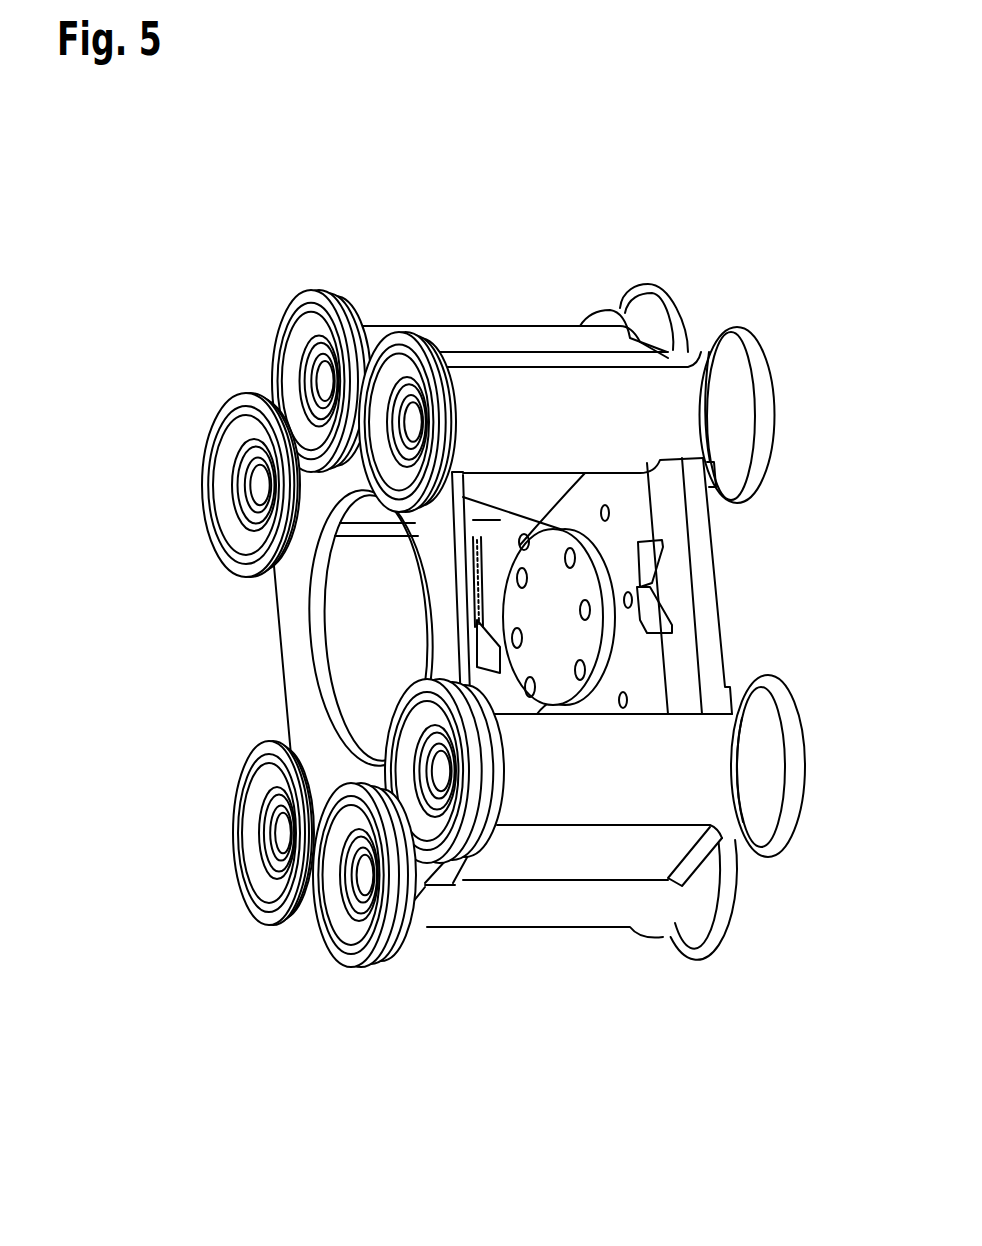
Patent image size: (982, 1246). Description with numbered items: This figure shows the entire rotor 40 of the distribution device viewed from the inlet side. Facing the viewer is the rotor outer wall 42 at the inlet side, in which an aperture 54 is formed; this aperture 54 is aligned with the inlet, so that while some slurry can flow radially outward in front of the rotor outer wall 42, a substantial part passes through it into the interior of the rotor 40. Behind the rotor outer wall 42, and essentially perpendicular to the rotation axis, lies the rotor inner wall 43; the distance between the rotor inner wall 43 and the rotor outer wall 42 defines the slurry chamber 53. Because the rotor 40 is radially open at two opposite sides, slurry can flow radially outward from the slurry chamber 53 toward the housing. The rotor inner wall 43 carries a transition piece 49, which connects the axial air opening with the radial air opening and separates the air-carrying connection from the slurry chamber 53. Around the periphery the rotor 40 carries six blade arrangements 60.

The rotor 40 is at (142, 226).
The rotor outer wall at the inlet side 42 is at (295, 612).
The rotor inner wall 43 is at (650, 660).
The transition piece 49 is at (520, 493).
The slurry chamber 53 is at (358, 648).
The aperture 54 is at (323, 687).
The blade arrangements 60 is at (302, 255).